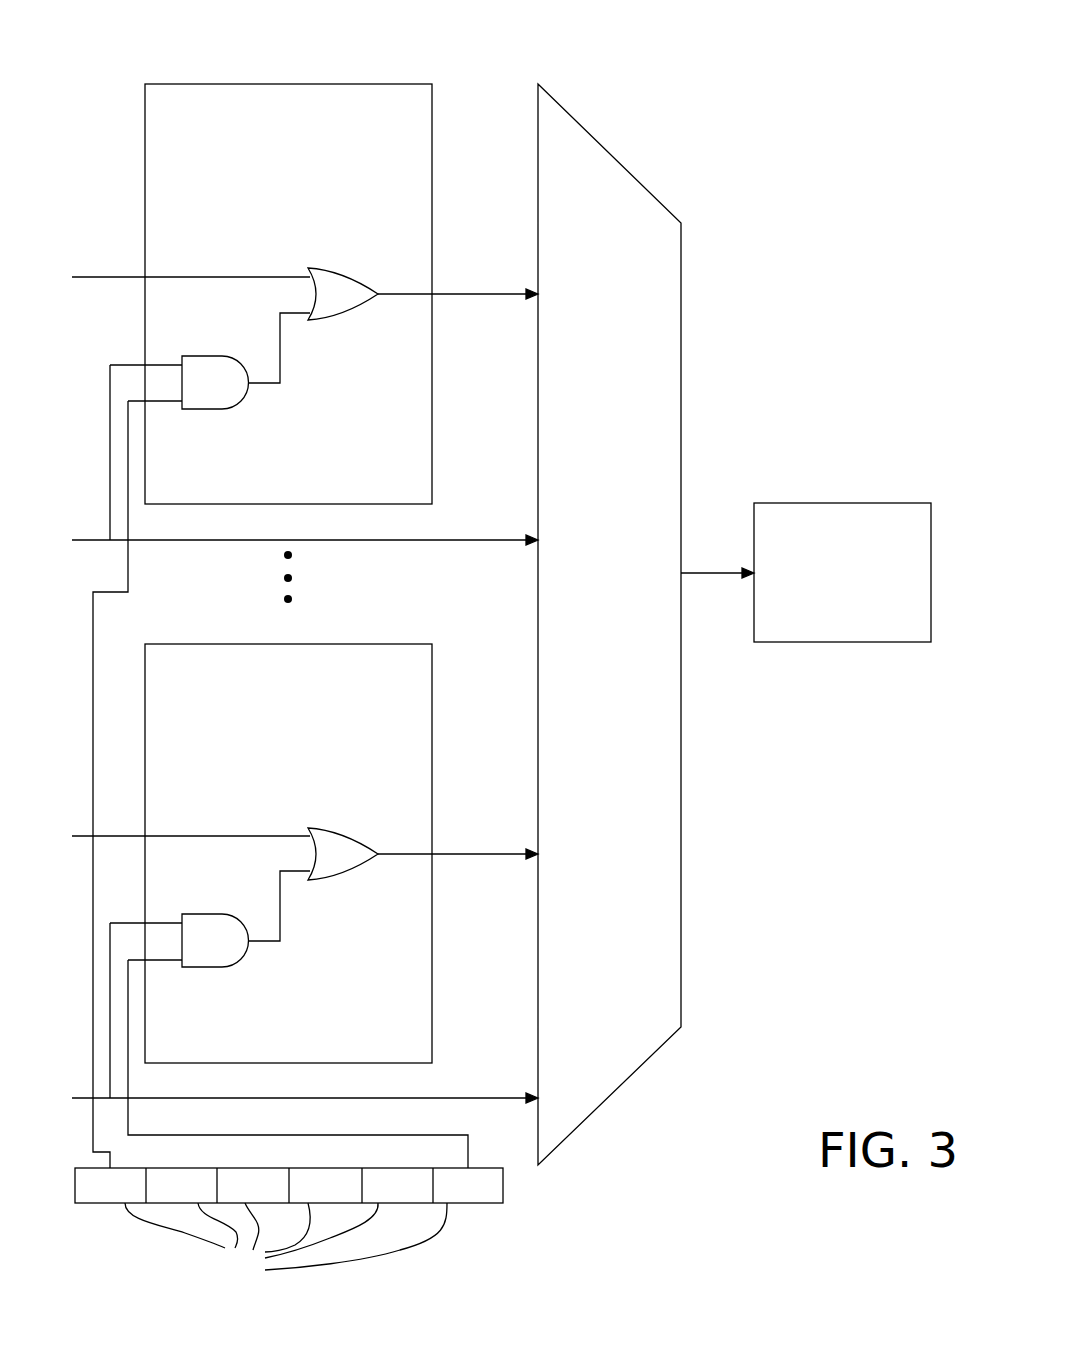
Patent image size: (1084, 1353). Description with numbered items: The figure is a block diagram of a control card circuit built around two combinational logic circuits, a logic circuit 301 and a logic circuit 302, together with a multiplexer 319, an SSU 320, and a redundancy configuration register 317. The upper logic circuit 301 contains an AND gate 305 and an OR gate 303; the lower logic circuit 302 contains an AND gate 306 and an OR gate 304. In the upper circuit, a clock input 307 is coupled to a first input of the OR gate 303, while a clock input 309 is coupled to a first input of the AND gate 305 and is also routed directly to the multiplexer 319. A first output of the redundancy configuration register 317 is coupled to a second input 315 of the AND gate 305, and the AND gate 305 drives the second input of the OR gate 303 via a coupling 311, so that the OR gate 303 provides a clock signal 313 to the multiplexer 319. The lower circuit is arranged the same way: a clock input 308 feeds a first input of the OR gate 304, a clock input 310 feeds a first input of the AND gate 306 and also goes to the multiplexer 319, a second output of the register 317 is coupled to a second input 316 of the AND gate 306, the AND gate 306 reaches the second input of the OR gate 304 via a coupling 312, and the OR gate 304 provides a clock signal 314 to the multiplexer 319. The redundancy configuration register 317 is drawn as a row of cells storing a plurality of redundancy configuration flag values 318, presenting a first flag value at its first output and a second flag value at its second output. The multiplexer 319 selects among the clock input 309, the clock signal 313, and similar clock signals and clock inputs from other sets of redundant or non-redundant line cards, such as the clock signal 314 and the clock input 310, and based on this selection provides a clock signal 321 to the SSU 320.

The logic circuit 301 is at (357, 84).
The logic circuit 302 is at (360, 644).
The OR gate 303 is at (357, 275).
The OR gate 304 is at (352, 832).
The AND gate 305 is at (214, 410).
The AND gate 306 is at (222, 968).
The clock input 307 is at (117, 277).
The clock input 308 is at (125, 836).
The clock input 309 is at (197, 540).
The clock input 310 is at (468, 1098).
The coupling 311 is at (280, 347).
The coupling 312 is at (280, 915).
The clock signal 313 is at (467, 297).
The clock signal 314 is at (468, 852).
The second input of AND gate 315 is at (93, 618).
The second input of AND gate 316 is at (345, 1133).
The redundancy configuration register 317 is at (503, 1183).
The redundancy configuration flag values 318 is at (286, 1241).
The multiplexer 319 is at (603, 147).
The SSU 320 is at (841, 503).
The clock signal 321 is at (717, 567).